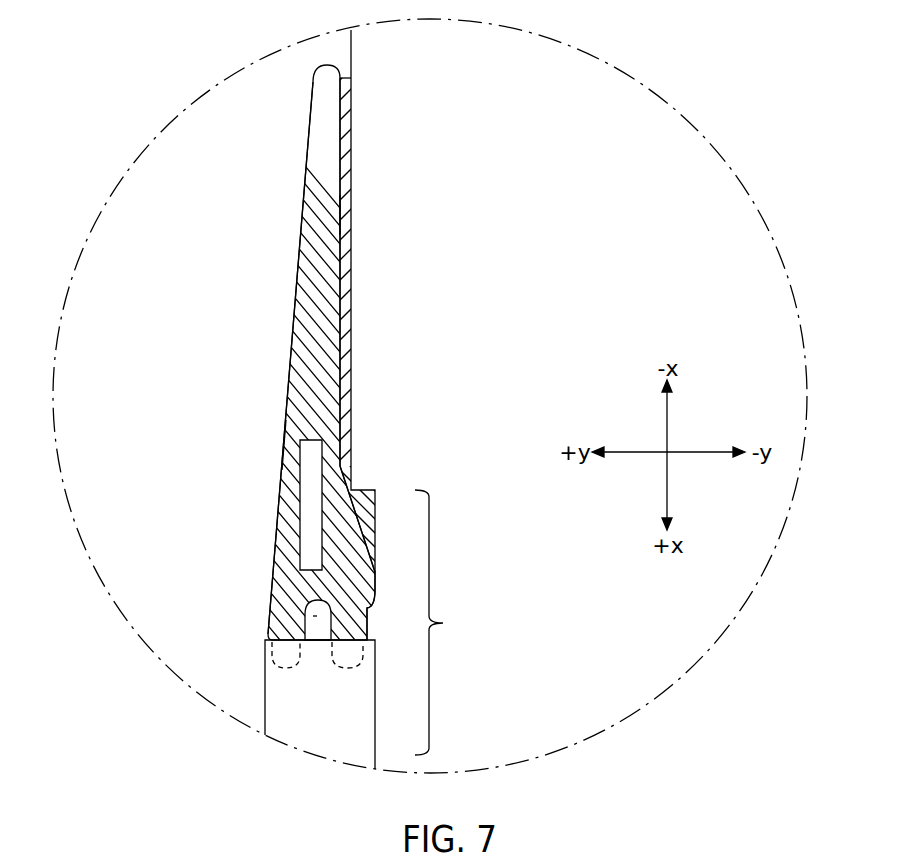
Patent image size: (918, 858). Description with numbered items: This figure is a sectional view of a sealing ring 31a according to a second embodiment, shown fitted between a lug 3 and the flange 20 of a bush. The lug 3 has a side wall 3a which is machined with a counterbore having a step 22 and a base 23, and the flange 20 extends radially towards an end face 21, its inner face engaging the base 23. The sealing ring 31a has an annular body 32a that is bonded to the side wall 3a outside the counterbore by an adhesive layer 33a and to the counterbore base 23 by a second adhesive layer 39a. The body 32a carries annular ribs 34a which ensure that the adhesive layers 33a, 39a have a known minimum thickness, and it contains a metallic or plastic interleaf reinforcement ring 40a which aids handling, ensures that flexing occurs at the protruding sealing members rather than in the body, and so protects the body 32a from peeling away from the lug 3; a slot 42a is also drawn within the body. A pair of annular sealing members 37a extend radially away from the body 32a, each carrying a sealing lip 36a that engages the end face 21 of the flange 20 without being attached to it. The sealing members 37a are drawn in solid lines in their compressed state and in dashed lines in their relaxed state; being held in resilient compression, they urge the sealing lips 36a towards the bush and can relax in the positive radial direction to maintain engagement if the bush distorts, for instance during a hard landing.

The lug 3 is at (372, 127).
The side wall 3a is at (350, 262).
The adhesive layer 33a is at (347, 78).
The annular body 32a is at (290, 325).
The annular ribs 34a is at (327, 210).
The sealing ring 31a is at (208, 378).
The interleaf reinforcement ring 40a is at (284, 444).
The slot 42a is at (311, 455).
The adhesive layer 39a is at (362, 502).
The step 22 is at (365, 490).
The base 23 is at (362, 536).
The end face 21 is at (305, 617).
The annular sealing members 37a is at (268, 614).
The sealing lips 36a is at (290, 668).
The flange 20 is at (272, 707).